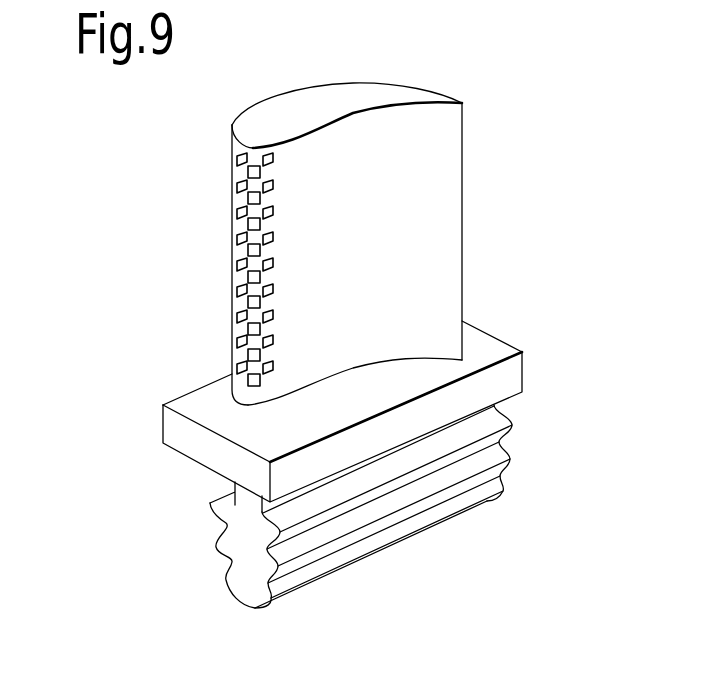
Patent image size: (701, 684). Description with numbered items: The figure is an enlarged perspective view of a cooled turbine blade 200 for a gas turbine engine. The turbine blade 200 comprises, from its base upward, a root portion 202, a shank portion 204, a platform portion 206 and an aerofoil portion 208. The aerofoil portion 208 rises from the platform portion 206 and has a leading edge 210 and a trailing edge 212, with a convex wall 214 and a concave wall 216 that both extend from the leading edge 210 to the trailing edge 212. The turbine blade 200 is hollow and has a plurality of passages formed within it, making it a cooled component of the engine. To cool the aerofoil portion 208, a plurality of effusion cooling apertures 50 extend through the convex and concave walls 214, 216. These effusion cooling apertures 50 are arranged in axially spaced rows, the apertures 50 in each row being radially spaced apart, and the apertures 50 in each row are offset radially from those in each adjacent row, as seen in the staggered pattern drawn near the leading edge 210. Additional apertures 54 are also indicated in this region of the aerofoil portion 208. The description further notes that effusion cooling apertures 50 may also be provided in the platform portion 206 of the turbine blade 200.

The turbine blade 200 is at (507, 172).
The root portion 202 is at (498, 467).
The shank portion 204 is at (250, 502).
The platform portion 206 is at (508, 373).
The aerofoil portion 208 is at (453, 285).
The leading edge 210 is at (232, 252).
The trailing edge 212 is at (462, 207).
The convex wall 214 is at (285, 93).
The concave wall 216 is at (430, 137).
The effusion cooling apertures 50 is at (268, 340).
The cooling holes 54 is at (236, 212).